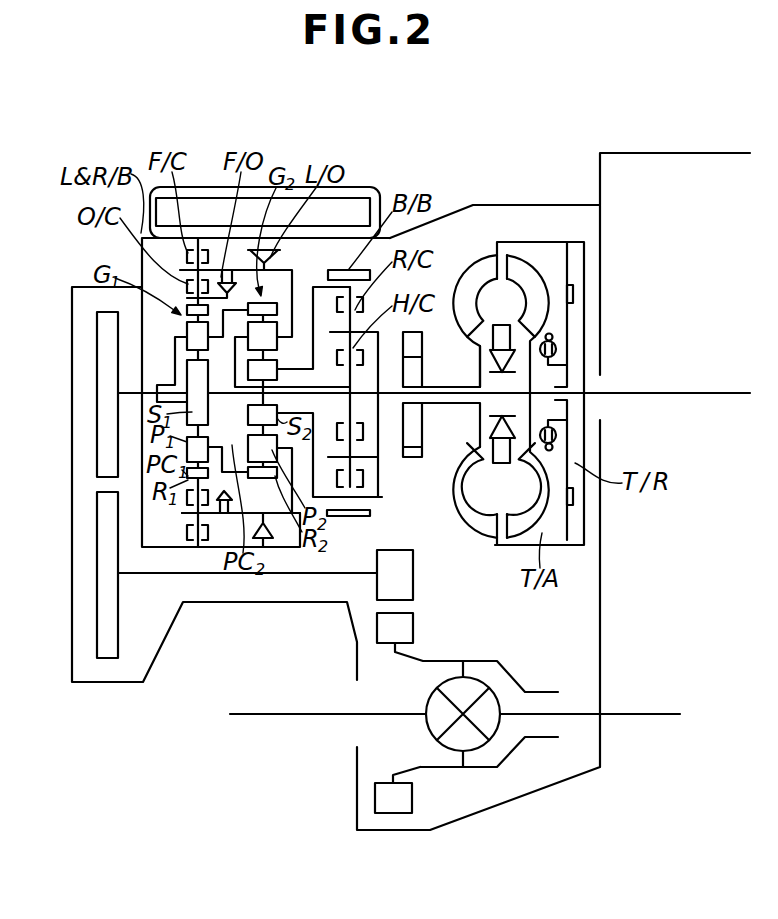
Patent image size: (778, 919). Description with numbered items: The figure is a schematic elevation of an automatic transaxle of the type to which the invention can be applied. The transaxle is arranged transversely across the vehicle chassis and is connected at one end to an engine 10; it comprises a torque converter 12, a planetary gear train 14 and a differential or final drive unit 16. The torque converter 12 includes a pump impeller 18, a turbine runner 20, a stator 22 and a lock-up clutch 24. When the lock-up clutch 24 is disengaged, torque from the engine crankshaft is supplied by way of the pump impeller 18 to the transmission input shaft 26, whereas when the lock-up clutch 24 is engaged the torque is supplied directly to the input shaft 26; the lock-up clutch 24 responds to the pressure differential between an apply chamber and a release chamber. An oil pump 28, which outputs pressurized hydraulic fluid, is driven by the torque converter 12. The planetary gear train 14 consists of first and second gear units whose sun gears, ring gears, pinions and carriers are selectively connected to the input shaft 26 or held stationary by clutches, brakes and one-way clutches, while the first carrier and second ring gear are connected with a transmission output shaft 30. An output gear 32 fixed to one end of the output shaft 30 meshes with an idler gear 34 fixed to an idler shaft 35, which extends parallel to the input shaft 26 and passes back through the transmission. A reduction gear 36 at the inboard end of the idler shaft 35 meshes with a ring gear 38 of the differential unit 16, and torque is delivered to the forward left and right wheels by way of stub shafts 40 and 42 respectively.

The engine 10 is at (637, 152).
The torque converter 12 is at (519, 240).
The gear train 14 is at (223, 253).
The differential or final drive unit 16 is at (481, 676).
The pump impeller 18 is at (480, 258).
The turbine runner 20 is at (524, 273).
The stator 22 is at (502, 324).
The lock-up clutch 24 is at (570, 319).
The transmission input shaft 26 is at (441, 391).
The oil pump 28 is at (410, 458).
The transmission output shaft 30 is at (143, 388).
The output gear 32 is at (98, 413).
The idler gear 34 is at (100, 583).
The idler shaft 35 is at (342, 572).
The reduction gear 36 is at (413, 558).
The ring gear 38 is at (397, 806).
The stub shaft 40 is at (319, 716).
The stub shaft 42 is at (651, 716).